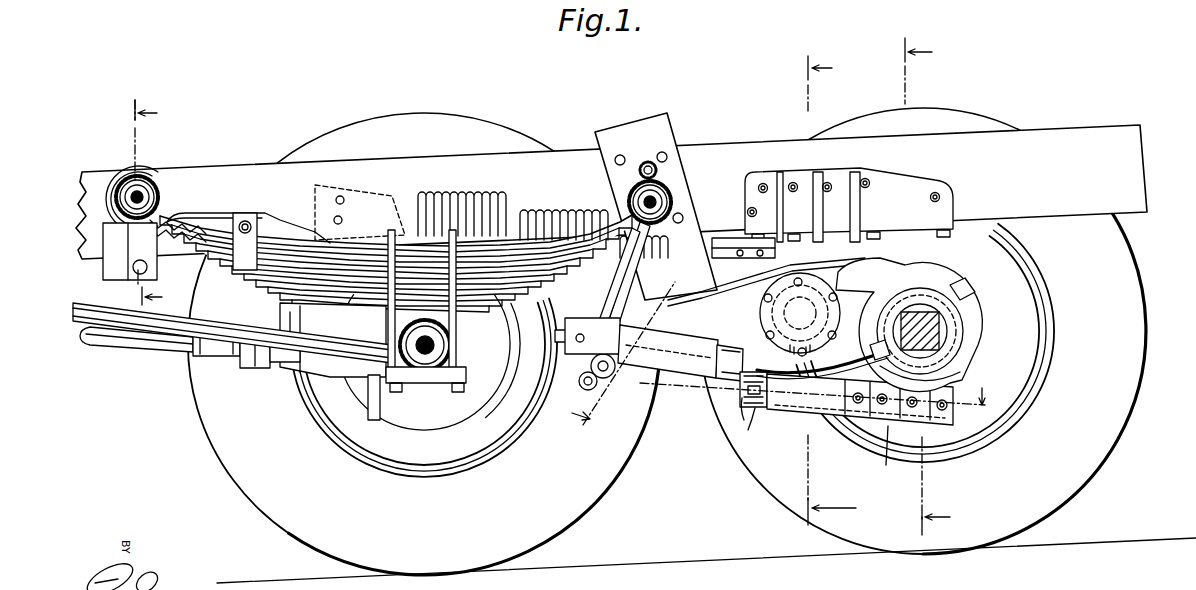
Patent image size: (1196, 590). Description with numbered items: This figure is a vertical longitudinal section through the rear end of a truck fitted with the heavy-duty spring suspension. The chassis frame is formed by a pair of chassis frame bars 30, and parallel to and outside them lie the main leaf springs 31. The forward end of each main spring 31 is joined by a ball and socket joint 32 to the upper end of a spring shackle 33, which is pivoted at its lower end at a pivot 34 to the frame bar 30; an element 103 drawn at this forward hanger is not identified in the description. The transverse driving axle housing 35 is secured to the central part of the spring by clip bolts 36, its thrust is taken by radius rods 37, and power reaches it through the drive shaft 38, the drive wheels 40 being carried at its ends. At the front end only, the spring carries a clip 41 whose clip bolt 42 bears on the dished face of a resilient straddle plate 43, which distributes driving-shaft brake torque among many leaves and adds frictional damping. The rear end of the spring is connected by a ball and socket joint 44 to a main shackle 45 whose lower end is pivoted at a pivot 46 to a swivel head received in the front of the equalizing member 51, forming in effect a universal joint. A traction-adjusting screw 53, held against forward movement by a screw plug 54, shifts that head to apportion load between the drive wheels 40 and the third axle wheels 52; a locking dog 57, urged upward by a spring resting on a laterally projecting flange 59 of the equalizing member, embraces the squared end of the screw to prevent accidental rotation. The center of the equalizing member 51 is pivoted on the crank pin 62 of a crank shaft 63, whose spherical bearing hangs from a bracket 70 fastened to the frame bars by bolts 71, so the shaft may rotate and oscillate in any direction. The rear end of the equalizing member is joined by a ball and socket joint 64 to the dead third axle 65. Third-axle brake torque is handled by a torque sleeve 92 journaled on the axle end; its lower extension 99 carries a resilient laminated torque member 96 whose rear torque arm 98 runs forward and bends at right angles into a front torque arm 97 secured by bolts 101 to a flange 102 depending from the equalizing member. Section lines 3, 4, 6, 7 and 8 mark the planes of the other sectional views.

The section line 3- 3 is at (136, 202).
The section line 4- 4 is at (818, 393).
The section line 6- 6 is at (927, 282).
The section line 7- 7 is at (821, 281).
The section line 8- 8 is at (625, 352).
The chassis frame bars 30 is at (1118, 126).
The main leaf springs 31 is at (258, 277).
The ball and socket joint 32 is at (143, 188).
The spring shackle 33 is at (118, 262).
The pivot 34 is at (133, 272).
The driving axle housing 35 is at (425, 379).
The clip bolts 36 is at (400, 386).
The radius rods 37 is at (137, 324).
The drive shaft 38 is at (105, 349).
The drive wheels 40 is at (422, 114).
The clip 41 is at (250, 220).
The clip bolt 42 is at (240, 210).
The resilient straddle plate 43 is at (200, 210).
The ball and socket joint 44 is at (628, 200).
The main shackle 45 is at (618, 290).
The pivot 46 is at (612, 377).
The equalizing member 51 is at (614, 305).
The third axle wheels 52 is at (915, 108).
The traction-adjusting screw 53 is at (716, 385).
The screw plug 54 is at (555, 336).
The locking dog 57 is at (727, 386).
The laterally projecting flange 59 is at (722, 290).
The crank pin 62 is at (800, 314).
The crank shaft 63 is at (880, 318).
The ball and socket joint 64 is at (962, 292).
The third axle 65 is at (930, 331).
The bracket 70 is at (956, 192).
The bolts 71 is at (938, 196).
The torque sleeve 92 is at (960, 375).
The torque member 96 is at (763, 409).
The front torque arm 97 is at (752, 398).
The rear torque arm 98 is at (815, 411).
The lower extension 99 is at (888, 426).
The bolts 101 is at (744, 408).
The flange 102 is at (752, 430).
The spring hanger 103 is at (110, 200).